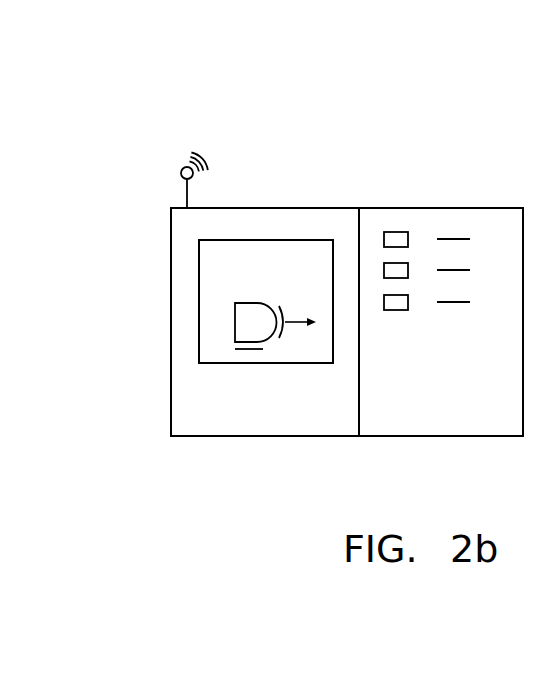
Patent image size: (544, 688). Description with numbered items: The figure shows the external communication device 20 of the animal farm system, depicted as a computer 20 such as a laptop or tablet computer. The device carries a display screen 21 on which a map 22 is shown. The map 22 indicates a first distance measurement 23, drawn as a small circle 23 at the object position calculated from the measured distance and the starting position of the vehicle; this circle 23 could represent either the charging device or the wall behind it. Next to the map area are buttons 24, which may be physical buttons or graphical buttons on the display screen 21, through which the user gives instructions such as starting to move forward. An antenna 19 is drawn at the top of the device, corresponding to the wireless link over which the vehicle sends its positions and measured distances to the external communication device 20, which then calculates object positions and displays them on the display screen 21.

The antenna 19 is at (187, 190).
The external communication device 20 is at (352, 113).
The display screen 21 is at (198, 347).
The map 22 is at (216, 295).
The first distance measurement 23 is at (259, 363).
The buttons 24 is at (395, 270).